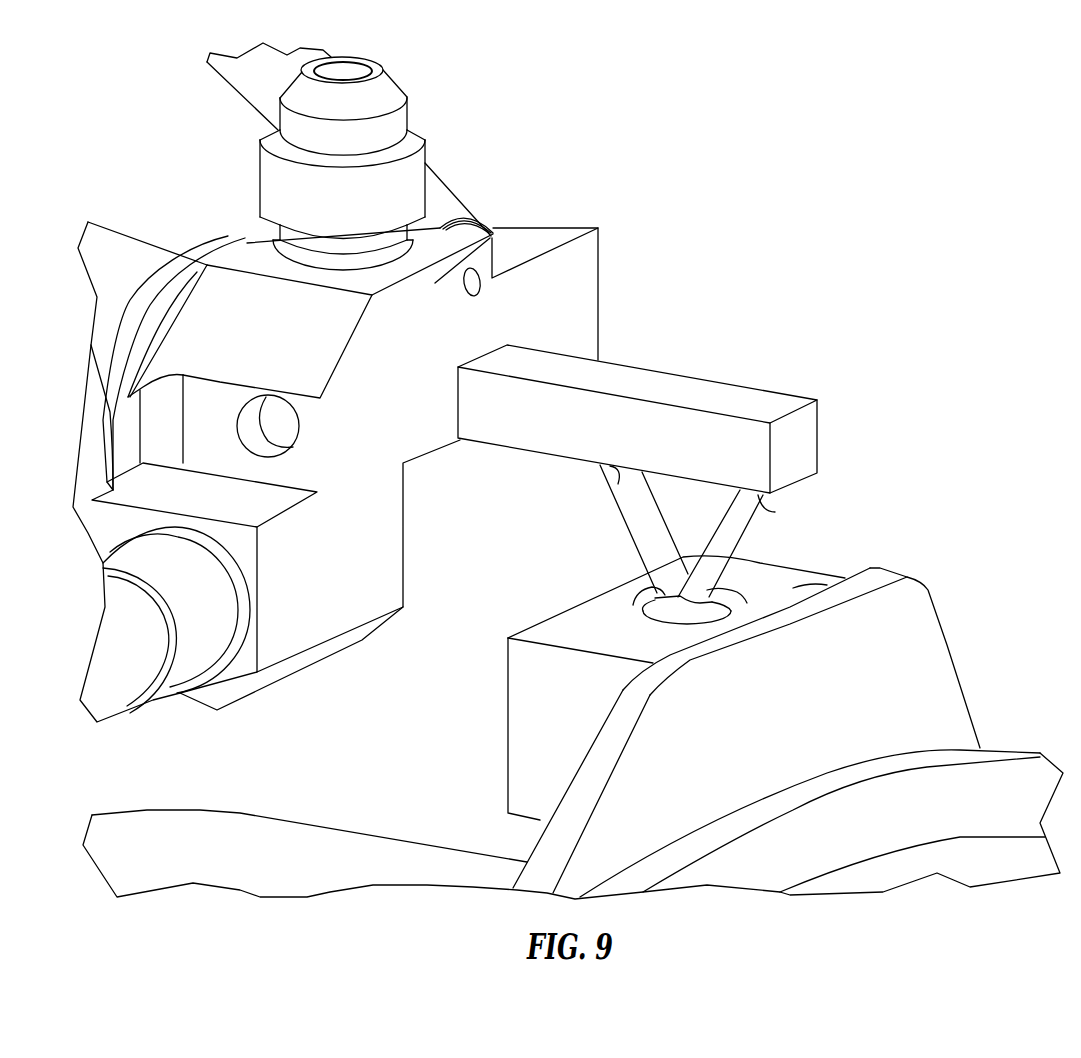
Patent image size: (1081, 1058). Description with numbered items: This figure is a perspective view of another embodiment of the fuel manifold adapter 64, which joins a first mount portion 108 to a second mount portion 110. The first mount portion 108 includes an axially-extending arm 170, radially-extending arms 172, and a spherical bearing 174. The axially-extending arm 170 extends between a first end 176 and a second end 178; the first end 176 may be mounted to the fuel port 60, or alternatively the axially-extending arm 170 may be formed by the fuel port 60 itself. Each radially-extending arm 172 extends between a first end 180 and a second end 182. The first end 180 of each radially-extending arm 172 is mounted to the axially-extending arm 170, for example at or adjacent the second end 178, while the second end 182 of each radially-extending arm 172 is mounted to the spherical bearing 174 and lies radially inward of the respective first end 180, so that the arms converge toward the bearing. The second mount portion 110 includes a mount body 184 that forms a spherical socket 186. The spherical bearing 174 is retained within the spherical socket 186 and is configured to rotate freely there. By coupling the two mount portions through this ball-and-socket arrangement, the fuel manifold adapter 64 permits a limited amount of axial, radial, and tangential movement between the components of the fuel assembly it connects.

The fuel port 60 is at (435, 283).
The fuel manifold adapter 64 is at (815, 267).
The first mount portion 108 is at (427, 347).
The second mount portion 110 is at (923, 695).
The axially-extending arm 170 is at (497, 432).
The radially-extending arms 172 is at (637, 527).
The spherical bearing 174 is at (680, 615).
The first end of the axially-extending arm 176 is at (460, 392).
The second end of the axially-extending arm 178 is at (795, 435).
The first end of the radially-extending arm 180 is at (617, 483).
The second end of the radially-extending arm 182 is at (633, 605).
The mount body 184 is at (830, 588).
The spherical socket 186 is at (700, 630).